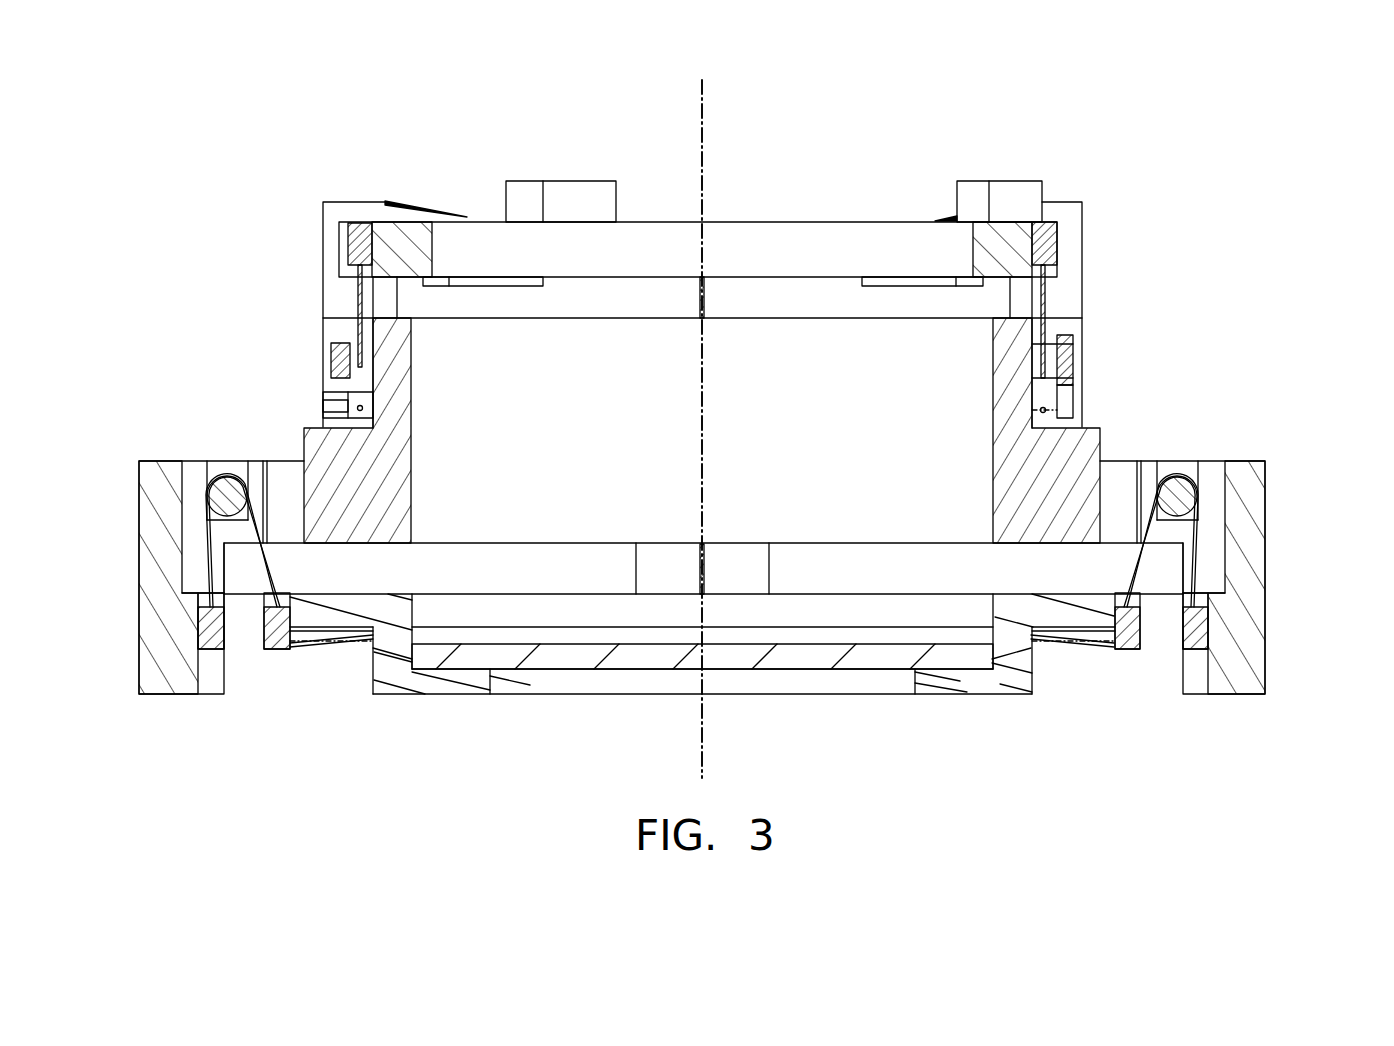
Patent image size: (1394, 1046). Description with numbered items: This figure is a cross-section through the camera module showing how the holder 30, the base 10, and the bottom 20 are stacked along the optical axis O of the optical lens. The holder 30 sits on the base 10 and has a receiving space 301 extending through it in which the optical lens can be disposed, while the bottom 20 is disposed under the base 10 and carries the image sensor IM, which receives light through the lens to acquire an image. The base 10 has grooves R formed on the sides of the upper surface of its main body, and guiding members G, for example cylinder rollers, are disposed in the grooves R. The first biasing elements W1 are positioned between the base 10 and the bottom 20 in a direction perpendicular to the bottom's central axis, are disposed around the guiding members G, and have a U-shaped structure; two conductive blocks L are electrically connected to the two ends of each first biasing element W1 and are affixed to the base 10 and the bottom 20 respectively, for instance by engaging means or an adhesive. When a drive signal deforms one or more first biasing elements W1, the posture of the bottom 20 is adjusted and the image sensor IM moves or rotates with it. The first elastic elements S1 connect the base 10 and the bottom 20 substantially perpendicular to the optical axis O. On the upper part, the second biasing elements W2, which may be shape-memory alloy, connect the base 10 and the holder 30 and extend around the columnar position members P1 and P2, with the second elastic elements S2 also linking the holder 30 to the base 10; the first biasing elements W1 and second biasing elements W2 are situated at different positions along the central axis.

The base 10 is at (160, 596).
The bottom 20 is at (455, 672).
The holder 30 is at (1012, 248).
The receiving space 301 is at (823, 250).
The conductive block L is at (355, 245).
The first elastic element S1 is at (343, 647).
The second elastic element S2 is at (400, 204).
The first biasing element W1 is at (213, 535).
The second biasing element W2 is at (700, 303).
The position member P1 is at (340, 362).
The position member P2 is at (1065, 403).
The groove R is at (228, 476).
The guiding member G is at (195, 500).
The image sensor IM is at (565, 657).
The optical axis O is at (702, 410).